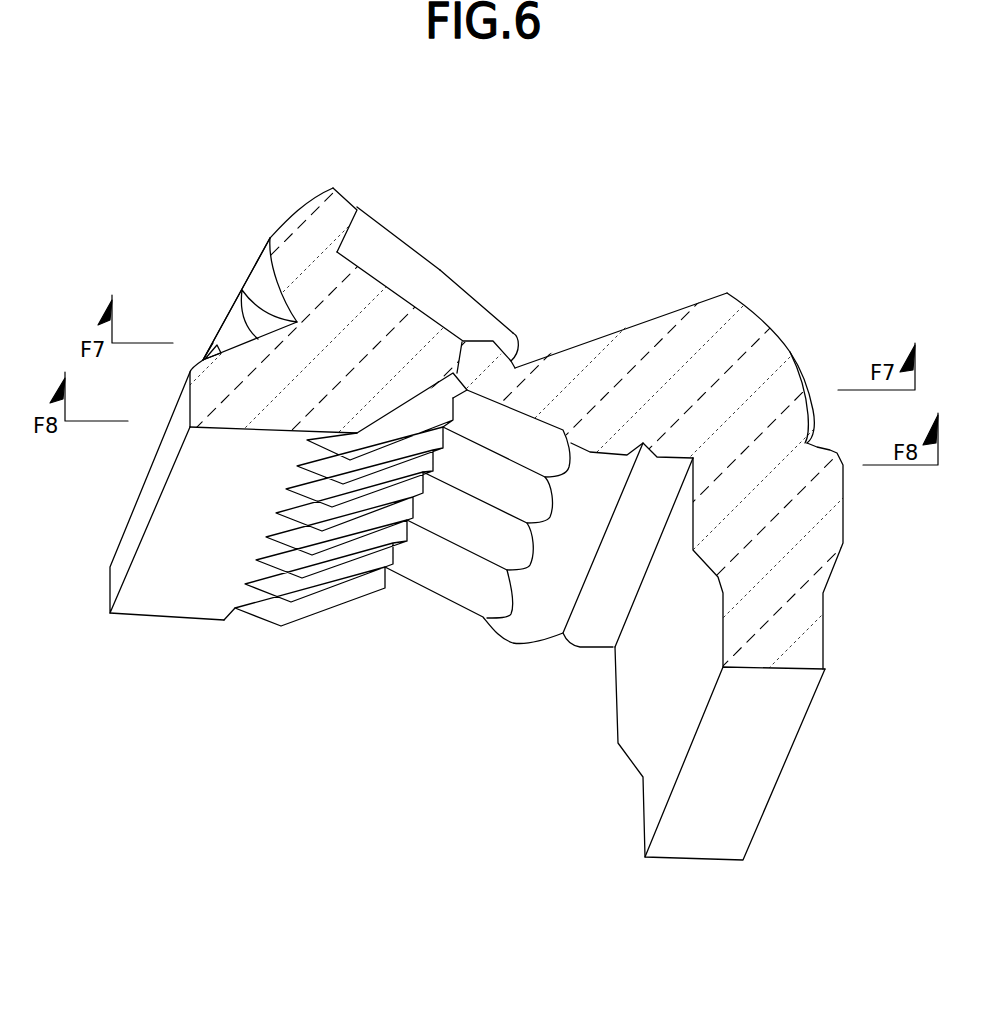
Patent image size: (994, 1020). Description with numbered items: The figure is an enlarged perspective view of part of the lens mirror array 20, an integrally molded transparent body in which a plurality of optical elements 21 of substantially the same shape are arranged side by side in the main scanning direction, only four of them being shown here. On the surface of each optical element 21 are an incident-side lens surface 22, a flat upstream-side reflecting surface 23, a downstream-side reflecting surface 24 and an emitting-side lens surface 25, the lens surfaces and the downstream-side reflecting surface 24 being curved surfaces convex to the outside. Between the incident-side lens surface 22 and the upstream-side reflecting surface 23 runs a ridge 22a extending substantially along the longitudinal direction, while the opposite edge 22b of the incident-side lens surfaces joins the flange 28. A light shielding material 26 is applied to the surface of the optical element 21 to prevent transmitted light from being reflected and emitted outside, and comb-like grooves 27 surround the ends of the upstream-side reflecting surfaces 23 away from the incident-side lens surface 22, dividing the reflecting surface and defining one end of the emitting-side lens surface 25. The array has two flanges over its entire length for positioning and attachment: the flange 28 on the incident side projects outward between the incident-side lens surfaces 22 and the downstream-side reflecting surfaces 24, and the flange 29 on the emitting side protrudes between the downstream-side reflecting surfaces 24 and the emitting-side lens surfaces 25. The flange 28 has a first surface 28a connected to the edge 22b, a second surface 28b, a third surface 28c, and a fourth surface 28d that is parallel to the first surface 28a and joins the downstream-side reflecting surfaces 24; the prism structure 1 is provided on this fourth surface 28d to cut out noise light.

The prism structure 1 is at (352, 622).
The lens mirror array 20 is at (748, 240).
The optical element 21 is at (268, 240).
The incident-side lens surface 22 is at (315, 200).
The ridge 22a is at (333, 184).
The edge 22b is at (242, 288).
The upstream-side reflecting surface 23 is at (425, 256).
The downstream-side reflecting surface 24 is at (467, 540).
The emitting-side lens surface 25 is at (783, 340).
The light shielding material 26 is at (373, 237).
The groove 27 is at (460, 288).
The flange 28 is at (110, 592).
The first surface 28a is at (214, 348).
The second surface 28b is at (140, 492).
The third surface 28c is at (166, 602).
The fourth surface 28d is at (231, 609).
The flange 29 is at (793, 757).